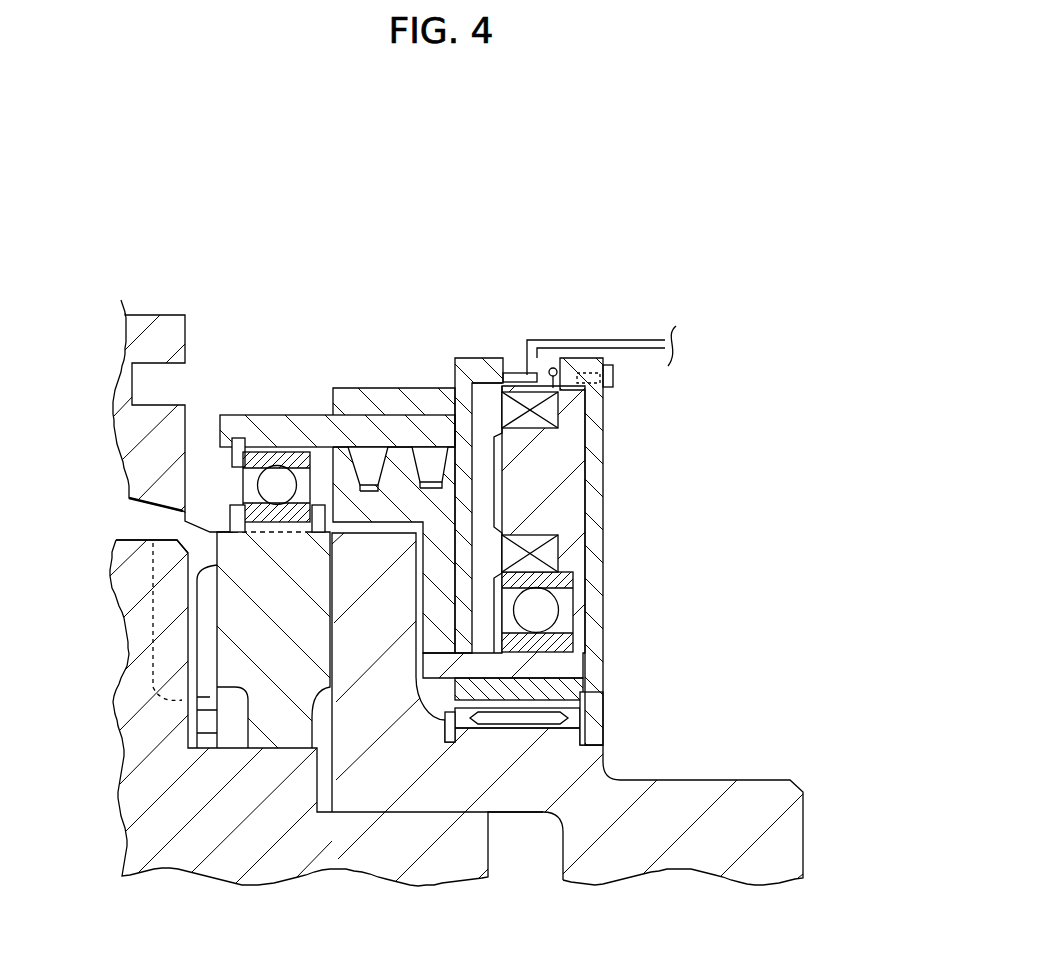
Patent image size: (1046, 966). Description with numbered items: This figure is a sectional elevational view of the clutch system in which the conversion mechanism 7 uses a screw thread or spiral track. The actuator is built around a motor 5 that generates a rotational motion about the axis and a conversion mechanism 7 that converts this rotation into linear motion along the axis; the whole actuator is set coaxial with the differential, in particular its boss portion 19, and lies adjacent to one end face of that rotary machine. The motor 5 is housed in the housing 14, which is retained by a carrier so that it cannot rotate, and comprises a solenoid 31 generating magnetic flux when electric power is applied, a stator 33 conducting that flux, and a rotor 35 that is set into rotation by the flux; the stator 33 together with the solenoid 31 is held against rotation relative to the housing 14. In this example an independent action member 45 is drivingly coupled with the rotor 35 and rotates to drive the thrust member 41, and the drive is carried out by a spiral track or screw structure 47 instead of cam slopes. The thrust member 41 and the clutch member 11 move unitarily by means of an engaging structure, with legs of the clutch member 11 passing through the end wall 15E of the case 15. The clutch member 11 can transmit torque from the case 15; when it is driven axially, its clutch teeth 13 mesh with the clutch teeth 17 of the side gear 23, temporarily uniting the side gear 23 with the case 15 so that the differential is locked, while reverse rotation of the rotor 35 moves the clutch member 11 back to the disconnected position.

The motor 5 is at (751, 466).
The conversion mechanism 7 is at (345, 244).
The clutch member 11 is at (223, 533).
The clutch teeth 13 is at (205, 634).
The housing 14 is at (487, 358).
The case 15 is at (152, 315).
The end wall 15E is at (330, 623).
The clutch teeth 17 is at (168, 608).
The boss portion 19 is at (608, 768).
The side gear 23 is at (153, 538).
The solenoid 31 is at (560, 547).
The stator 33 is at (600, 462).
The rotor 35 is at (433, 388).
The thrust member 41 is at (243, 415).
The action member 45 is at (372, 465).
The spiral track or screw structure 47 is at (328, 475).